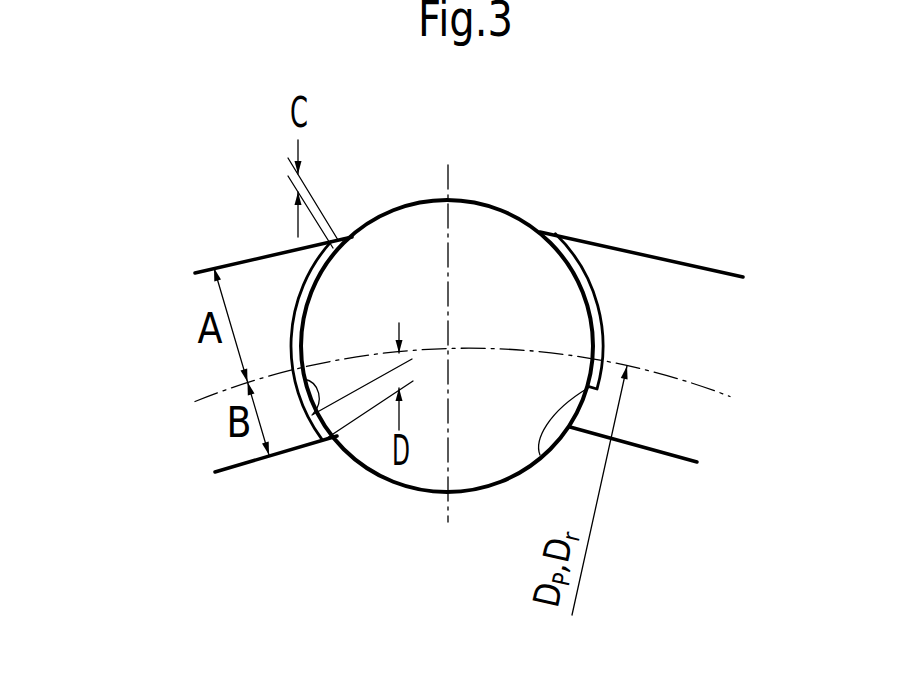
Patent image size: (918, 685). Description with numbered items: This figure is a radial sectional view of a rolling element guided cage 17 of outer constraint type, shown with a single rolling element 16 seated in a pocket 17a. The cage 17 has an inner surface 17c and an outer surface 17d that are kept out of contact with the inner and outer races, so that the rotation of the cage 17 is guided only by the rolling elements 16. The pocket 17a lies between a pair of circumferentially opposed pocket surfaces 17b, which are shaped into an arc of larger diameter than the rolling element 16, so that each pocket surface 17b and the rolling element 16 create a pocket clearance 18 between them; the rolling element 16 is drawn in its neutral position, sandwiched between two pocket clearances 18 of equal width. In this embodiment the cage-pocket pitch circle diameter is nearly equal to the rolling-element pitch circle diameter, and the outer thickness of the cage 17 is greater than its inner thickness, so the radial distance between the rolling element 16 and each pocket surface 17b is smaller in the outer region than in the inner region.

The rolling element 16 is at (415, 203).
The cage 17 is at (716, 262).
The pocket 17a is at (543, 232).
The pocket surface 17b is at (310, 414).
The inner surface 17c is at (243, 463).
The outer surface 17d is at (232, 264).
The pocket clearance 18 is at (588, 282).